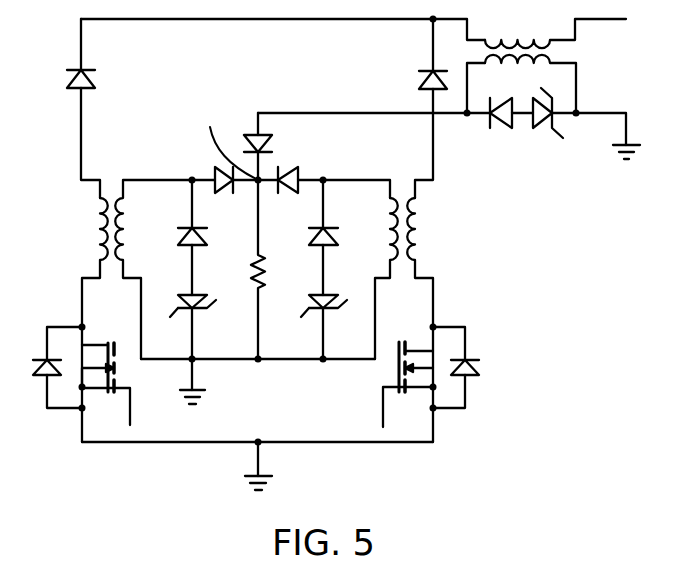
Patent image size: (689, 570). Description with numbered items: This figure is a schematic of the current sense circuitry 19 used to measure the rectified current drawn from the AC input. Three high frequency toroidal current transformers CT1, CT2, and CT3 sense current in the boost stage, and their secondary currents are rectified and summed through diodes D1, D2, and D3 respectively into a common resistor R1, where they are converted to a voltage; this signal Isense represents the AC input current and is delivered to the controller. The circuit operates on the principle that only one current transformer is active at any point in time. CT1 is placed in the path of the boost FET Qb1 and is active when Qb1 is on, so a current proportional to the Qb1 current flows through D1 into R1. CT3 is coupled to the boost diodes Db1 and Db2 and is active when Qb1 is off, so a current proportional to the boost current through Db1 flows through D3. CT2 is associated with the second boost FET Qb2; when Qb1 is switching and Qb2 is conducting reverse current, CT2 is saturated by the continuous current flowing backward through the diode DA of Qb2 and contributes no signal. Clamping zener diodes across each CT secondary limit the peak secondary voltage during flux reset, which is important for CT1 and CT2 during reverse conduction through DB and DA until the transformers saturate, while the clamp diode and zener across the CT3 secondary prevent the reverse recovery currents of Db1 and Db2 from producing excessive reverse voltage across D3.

The current sense circuitry 19 is at (244, 120).
The current sense signal Isense is at (242, 88).
The diode D3 is at (274, 146).
The diode D1 is at (225, 195).
The diode D2 is at (290, 195).
The common resistor R1 is at (241, 269).
The boost diode Db1 is at (58, 80).
The boost diode Db2 is at (410, 80).
The current transformer CT1 is at (137, 296).
The current transformer CT2 is at (404, 296).
The current transformer CT3 is at (555, 63).
The boost FET Qb1 is at (69, 384).
The boost FET Qb2 is at (447, 384).
The diode DB is at (46, 367).
The diode DA is at (471, 367).